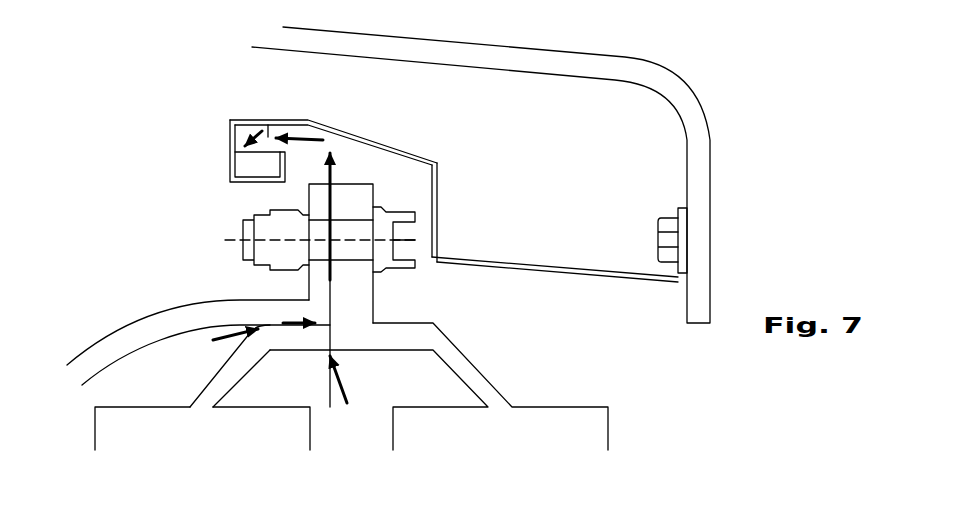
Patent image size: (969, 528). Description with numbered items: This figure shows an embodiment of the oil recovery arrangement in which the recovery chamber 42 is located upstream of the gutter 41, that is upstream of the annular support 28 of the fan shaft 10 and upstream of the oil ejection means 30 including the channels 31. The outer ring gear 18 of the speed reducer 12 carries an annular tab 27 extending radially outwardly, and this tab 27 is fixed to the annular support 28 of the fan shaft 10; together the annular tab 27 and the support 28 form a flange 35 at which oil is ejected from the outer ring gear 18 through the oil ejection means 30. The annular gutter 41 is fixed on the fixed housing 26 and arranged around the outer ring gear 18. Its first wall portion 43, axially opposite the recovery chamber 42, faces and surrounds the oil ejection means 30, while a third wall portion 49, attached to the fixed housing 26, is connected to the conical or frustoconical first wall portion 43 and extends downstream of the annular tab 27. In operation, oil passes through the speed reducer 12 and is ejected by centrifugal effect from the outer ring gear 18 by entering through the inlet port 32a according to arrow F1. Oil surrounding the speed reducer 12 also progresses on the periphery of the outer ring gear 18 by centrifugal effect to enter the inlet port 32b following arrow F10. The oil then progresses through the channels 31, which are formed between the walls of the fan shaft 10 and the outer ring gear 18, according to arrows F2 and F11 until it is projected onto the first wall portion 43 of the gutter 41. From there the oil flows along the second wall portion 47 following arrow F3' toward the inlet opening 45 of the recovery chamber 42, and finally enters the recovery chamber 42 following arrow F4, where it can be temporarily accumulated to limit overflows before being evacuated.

The fan shaft 10 is at (123, 340).
The speed reducer 12 is at (585, 388).
The outer ring gear 18 is at (475, 368).
The fixed housing 26 is at (570, 65).
The annular tab 27 is at (363, 200).
The annular support 28 is at (320, 200).
The oil ejection means 30 is at (308, 289).
The channels 31 is at (342, 201).
The inlet port 32a is at (300, 340).
The inlet port 32b is at (227, 348).
The flange 35 is at (400, 298).
The annular gutter 41 is at (333, 125).
The first wall portion 43 is at (407, 153).
The inlet opening 45 is at (268, 137).
The second wall portion 47 is at (258, 120).
The recovery chamber 42 is at (252, 165).
The third wall portion 49 is at (540, 263).
The arrow F1 is at (323, 387).
The arrow F2 is at (345, 272).
The arrow F3' is at (298, 106).
The arrow F4 is at (235, 138).
The arrow F10 is at (225, 333).
The arrow F11 is at (257, 337).